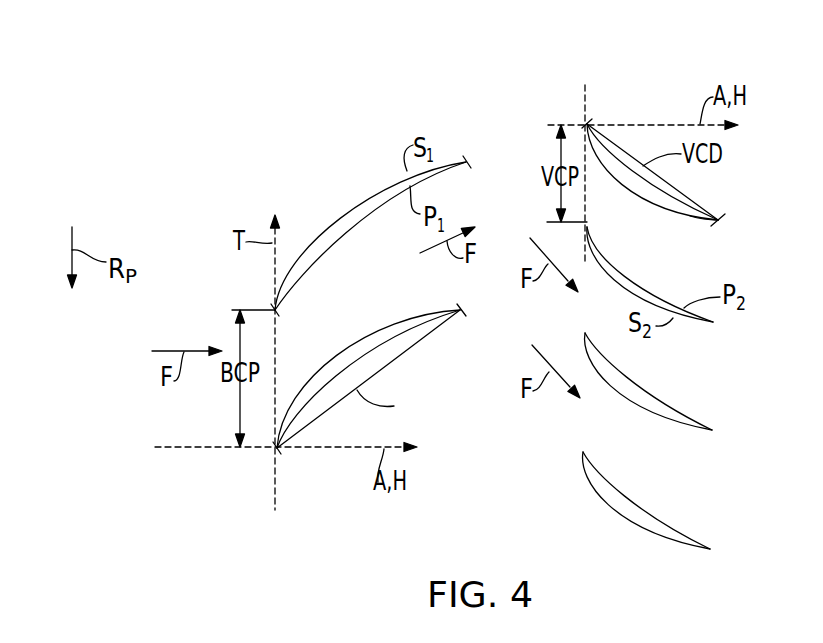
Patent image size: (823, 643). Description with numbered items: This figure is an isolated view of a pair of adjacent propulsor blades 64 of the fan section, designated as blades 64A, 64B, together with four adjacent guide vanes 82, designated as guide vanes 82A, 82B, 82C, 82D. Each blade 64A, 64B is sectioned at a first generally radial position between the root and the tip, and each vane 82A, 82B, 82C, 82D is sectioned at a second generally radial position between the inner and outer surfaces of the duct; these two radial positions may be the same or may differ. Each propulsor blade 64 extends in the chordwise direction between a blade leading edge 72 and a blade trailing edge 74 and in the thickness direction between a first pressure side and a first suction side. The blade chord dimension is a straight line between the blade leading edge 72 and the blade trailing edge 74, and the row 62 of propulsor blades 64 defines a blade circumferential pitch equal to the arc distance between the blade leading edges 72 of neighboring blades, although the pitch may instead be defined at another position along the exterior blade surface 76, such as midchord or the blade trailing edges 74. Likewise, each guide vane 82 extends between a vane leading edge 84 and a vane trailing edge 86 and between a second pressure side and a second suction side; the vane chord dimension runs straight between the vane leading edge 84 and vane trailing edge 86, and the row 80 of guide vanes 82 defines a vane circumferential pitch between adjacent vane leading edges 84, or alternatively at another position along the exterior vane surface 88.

The row of propulsor blades 62 is at (282, 172).
The propulsor blade 64 is at (350, 209).
The propulsor blade 64A is at (392, 317).
The propulsor blade 64B is at (343, 254).
The blade leading edge 72 is at (277, 312).
The blade trailing edge 74 is at (466, 162).
The exterior blade surface 76 is at (382, 188).
The row of guide vanes 80 is at (552, 68).
The guide vane 82 is at (630, 193).
The guide vane 82A is at (630, 502).
The guide vane 82B is at (630, 382).
The guide vane 82C is at (646, 284).
The guide vane 82D is at (658, 208).
The vane leading edge 84 is at (585, 124).
The vane trailing edge 86 is at (724, 220).
The exterior vane surface 88 is at (702, 226).